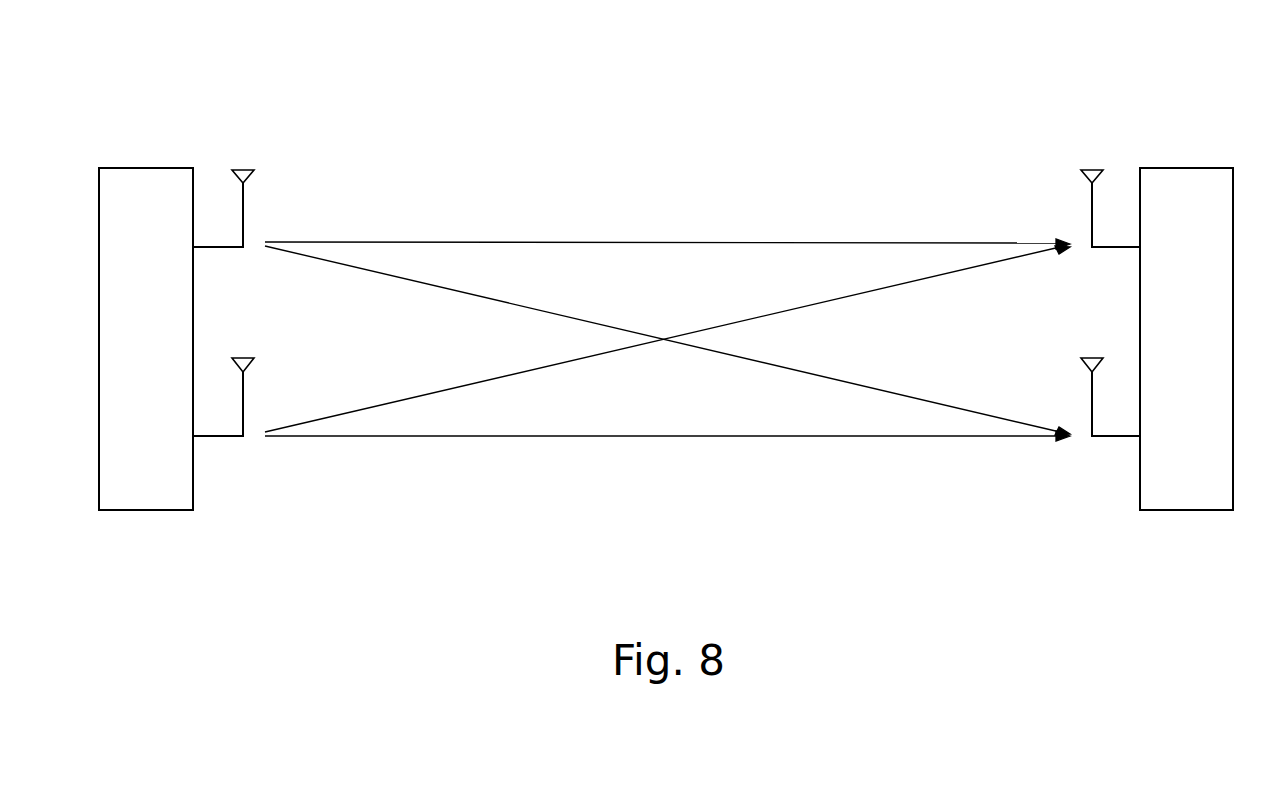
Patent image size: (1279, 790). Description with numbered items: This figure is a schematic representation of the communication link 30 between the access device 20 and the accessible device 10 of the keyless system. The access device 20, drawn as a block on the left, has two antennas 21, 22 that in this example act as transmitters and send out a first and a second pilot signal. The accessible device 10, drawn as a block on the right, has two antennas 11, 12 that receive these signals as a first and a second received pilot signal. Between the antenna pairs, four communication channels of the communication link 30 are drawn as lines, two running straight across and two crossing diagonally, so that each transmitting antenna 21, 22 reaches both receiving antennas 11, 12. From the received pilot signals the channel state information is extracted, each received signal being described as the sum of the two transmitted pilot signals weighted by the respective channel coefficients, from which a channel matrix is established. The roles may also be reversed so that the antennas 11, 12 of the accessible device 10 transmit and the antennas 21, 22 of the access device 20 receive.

The accessible device 10 is at (1173, 168).
The antenna 11 is at (1096, 168).
The antenna 12 is at (1087, 358).
The access device 20 is at (160, 168).
The antenna 21 is at (244, 168).
The antenna 22 is at (244, 358).
The communication link 30 is at (746, 232).